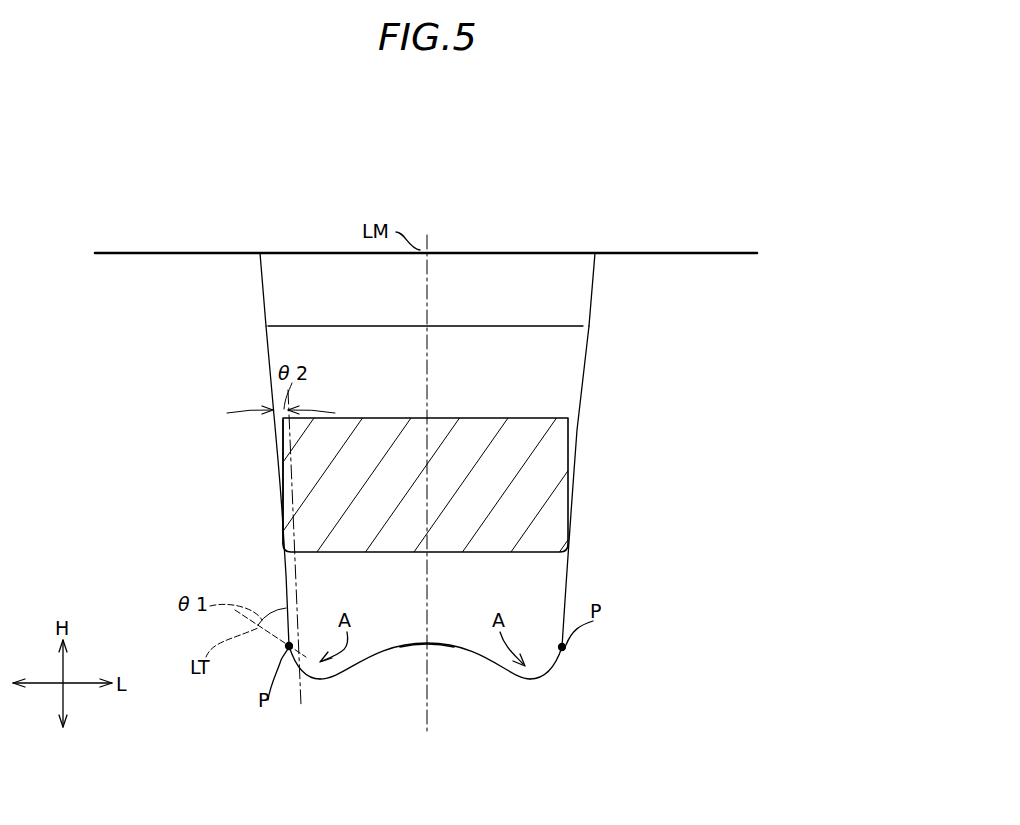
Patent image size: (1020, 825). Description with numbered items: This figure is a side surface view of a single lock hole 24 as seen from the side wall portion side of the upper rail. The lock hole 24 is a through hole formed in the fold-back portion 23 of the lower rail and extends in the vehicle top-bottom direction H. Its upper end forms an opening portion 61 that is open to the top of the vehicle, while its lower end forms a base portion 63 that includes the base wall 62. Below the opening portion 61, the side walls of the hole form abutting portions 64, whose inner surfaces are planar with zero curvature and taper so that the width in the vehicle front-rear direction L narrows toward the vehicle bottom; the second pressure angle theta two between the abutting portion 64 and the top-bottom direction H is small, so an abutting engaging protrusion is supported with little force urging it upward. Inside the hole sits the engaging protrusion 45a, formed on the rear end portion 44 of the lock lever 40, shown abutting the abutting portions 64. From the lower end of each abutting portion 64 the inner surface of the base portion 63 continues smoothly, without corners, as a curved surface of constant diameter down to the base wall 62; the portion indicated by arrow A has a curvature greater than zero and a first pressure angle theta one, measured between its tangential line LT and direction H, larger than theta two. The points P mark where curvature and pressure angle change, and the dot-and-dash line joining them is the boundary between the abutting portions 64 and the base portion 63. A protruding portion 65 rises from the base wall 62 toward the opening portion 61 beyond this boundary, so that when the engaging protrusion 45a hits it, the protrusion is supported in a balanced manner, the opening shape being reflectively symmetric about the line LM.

The fold-back portion 23 is at (431, 227).
The lock hole 24 is at (406, 585).
The rear end portion 44 is at (437, 457).
The lock lever 40 is at (473, 411).
The engaging protrusion 45a is at (290, 478).
The opening portion 61 is at (262, 267).
The abutting portion 64 is at (297, 586).
The base portion 63 is at (299, 647).
The base wall 62 is at (352, 668).
The protruding portion 65 is at (437, 642).